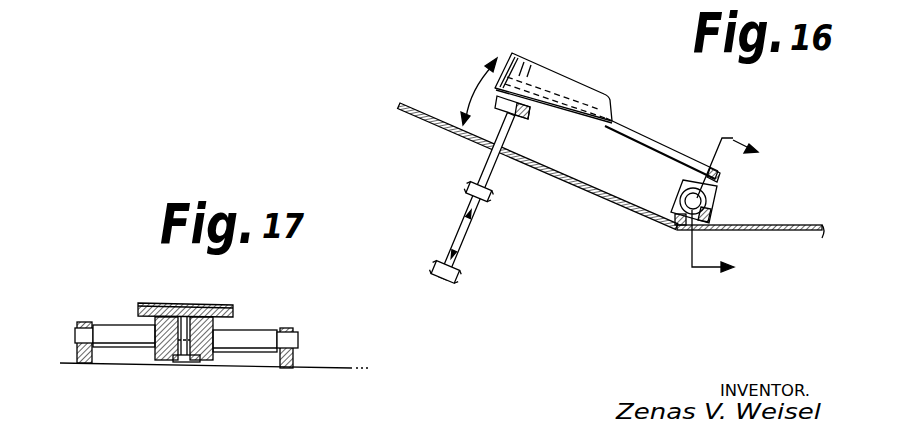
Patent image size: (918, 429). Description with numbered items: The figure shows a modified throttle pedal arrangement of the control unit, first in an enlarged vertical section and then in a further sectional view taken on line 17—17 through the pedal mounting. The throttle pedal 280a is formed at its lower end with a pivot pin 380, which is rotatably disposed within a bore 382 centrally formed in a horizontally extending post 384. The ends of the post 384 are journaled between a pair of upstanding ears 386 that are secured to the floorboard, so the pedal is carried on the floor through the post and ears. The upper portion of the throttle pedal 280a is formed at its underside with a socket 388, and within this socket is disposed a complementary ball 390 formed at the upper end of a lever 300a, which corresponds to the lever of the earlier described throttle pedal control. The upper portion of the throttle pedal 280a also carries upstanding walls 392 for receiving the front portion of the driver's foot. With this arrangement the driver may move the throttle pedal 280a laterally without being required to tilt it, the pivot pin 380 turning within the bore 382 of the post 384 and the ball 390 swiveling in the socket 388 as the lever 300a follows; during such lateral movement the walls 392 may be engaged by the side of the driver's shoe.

In FIG. 16, the upstanding walls 392 is at (568, 85).
In FIG. 16, the throttle pedal 280a is at (627, 133).
In FIG. 17, the throttle pedal 280a is at (233, 304).
In FIG. 16, the socket 388 is at (518, 126).
In FIG. 16, the ball 390 is at (499, 113).
In FIG. 16, the lever 300a is at (490, 172).
In FIG. 16, the pivot pin 380 is at (717, 190).
In FIG. 17, the pivot pin 380 is at (178, 348).
In FIG. 17, the bore 382 is at (190, 338).
In FIG. 17, the post 384 is at (273, 329).
In FIG. 16, the upstanding ears 386 is at (673, 227).
In FIG. 17, the upstanding ears 386 is at (88, 322).
In FIG. 16, the section line 17— 17 is at (736, 209).